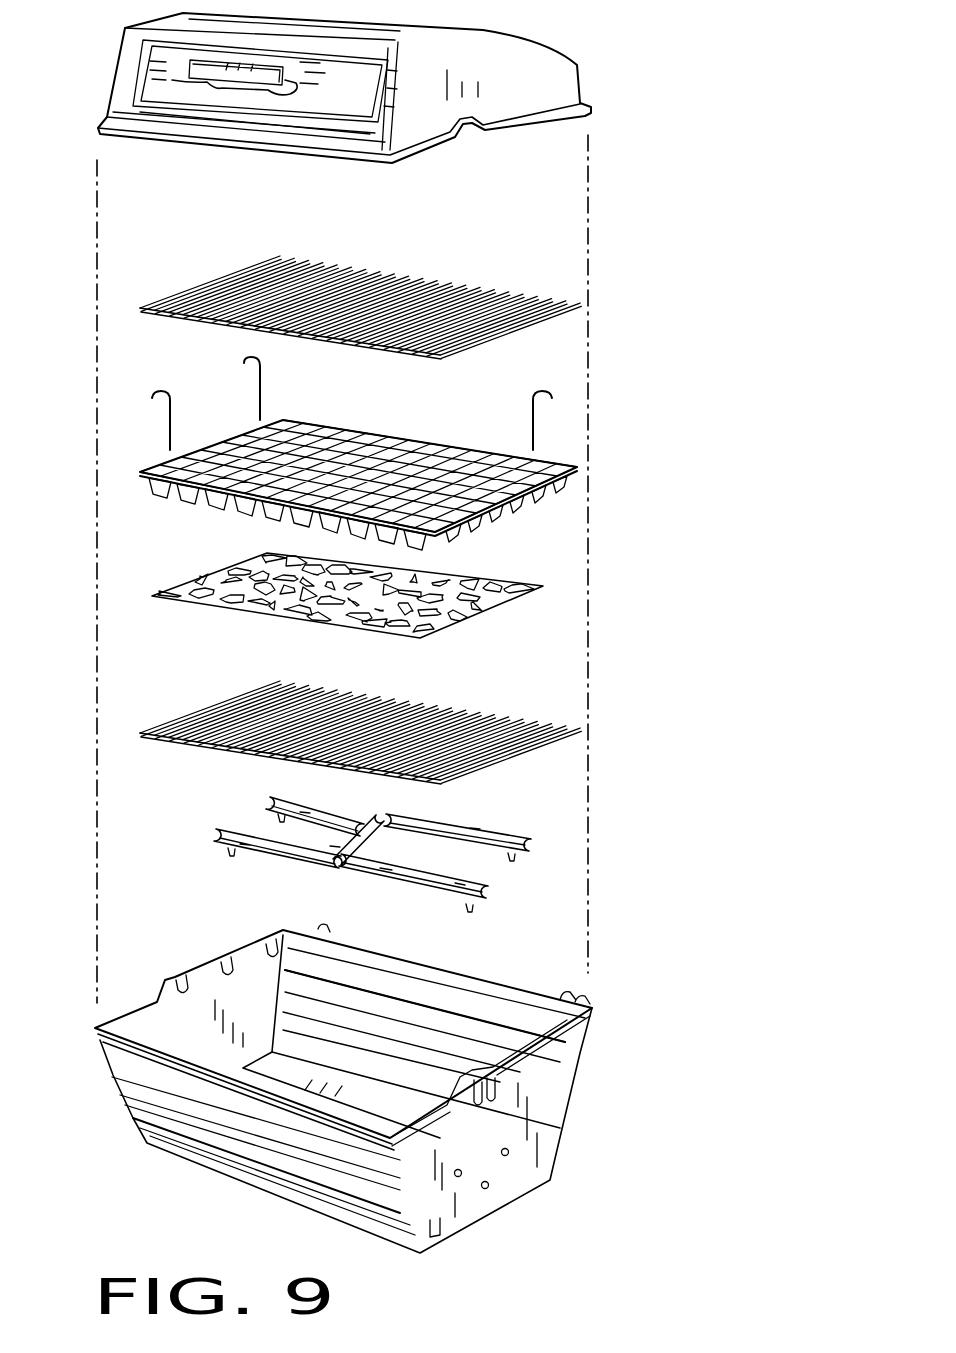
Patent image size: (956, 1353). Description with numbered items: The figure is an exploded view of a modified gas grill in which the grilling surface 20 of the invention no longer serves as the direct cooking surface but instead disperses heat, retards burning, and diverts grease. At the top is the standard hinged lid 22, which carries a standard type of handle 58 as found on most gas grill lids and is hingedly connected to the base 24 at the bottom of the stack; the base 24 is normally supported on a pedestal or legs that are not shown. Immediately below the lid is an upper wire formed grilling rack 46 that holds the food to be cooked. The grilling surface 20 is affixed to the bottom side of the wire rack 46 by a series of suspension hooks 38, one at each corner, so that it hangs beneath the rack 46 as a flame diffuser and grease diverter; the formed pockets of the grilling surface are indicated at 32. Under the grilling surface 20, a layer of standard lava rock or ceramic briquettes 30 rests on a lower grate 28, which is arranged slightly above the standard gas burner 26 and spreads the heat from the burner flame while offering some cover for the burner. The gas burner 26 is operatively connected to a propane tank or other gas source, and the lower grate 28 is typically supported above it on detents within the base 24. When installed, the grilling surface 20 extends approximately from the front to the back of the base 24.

The grilling surface 20 is at (354, 488).
The hinged lid 22 is at (373, 88).
The base 24 is at (557, 1063).
The gas burner 26 is at (530, 845).
The lower grate 28 is at (515, 720).
The lava rock or ceramic briquettes 30 is at (168, 603).
The tray cups 32 is at (155, 490).
The hooks 38 is at (533, 418).
The wire formed grilling rack 46 is at (513, 293).
The handle 58 is at (140, 85).